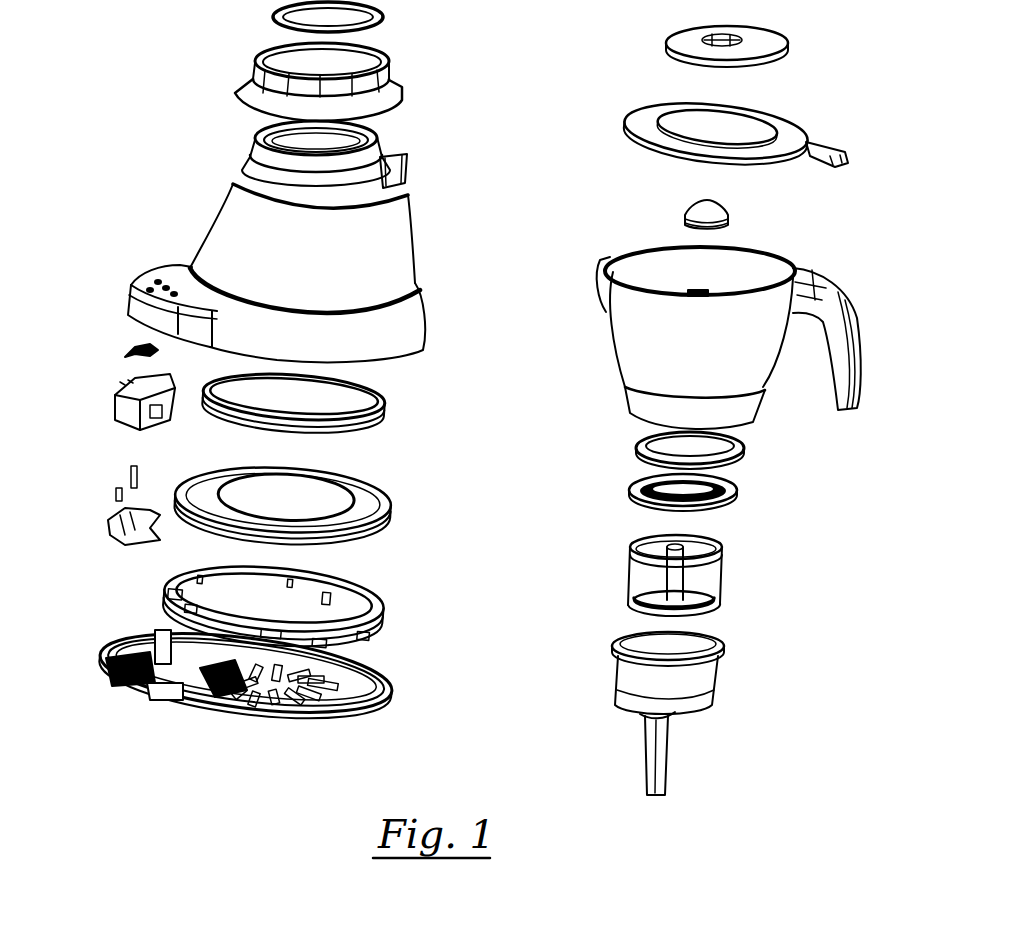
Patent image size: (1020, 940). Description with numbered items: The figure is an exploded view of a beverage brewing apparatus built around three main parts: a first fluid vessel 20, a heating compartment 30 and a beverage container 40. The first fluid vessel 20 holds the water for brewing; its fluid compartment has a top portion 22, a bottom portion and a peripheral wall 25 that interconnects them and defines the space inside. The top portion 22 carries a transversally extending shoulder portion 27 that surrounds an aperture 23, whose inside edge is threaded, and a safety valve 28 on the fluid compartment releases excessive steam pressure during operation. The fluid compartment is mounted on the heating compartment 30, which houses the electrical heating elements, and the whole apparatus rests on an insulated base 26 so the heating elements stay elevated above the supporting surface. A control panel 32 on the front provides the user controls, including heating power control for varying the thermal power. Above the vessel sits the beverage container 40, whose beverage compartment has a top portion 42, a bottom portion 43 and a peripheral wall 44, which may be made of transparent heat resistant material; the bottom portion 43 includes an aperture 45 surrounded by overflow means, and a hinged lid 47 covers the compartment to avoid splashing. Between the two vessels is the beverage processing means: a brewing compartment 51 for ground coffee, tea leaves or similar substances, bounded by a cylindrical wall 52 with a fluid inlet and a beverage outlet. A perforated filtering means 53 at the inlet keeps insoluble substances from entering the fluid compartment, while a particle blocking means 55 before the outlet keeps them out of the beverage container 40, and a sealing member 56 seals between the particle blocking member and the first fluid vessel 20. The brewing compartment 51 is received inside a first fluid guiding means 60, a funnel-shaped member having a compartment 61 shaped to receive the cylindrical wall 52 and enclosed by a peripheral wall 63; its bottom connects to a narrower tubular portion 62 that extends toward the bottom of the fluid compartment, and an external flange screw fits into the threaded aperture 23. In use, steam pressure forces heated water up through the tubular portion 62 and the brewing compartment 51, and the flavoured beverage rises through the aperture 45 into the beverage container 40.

The first fluid vessel 20 is at (326, 233).
The top portion 22 is at (398, 80).
The aperture 23 is at (358, 128).
The peripheral wall 25 is at (236, 226).
The insulated base 26 is at (410, 697).
The shoulder portion 27 is at (250, 131).
The safety valve 28 is at (408, 168).
The heating compartment 30 is at (383, 331).
The control panel 32 is at (128, 267).
The beverage container 40 is at (701, 309).
The top portion 42 is at (704, 309).
The bottom portion 43 is at (688, 462).
The peripheral wall 44 is at (623, 338).
The aperture 45 is at (735, 206).
The hinged lid 47 is at (800, 124).
The brewing compartment 51 is at (667, 570).
The cylindrical wall 52 is at (712, 576).
The perforated filtering means 53 is at (632, 606).
The particle blocking means 55 is at (740, 492).
The sealing member 56 is at (750, 447).
The first fluid guiding means 60 is at (683, 706).
The compartment 61 is at (682, 652).
The tubular portion 62 is at (655, 748).
The peripheral wall 63 is at (690, 690).